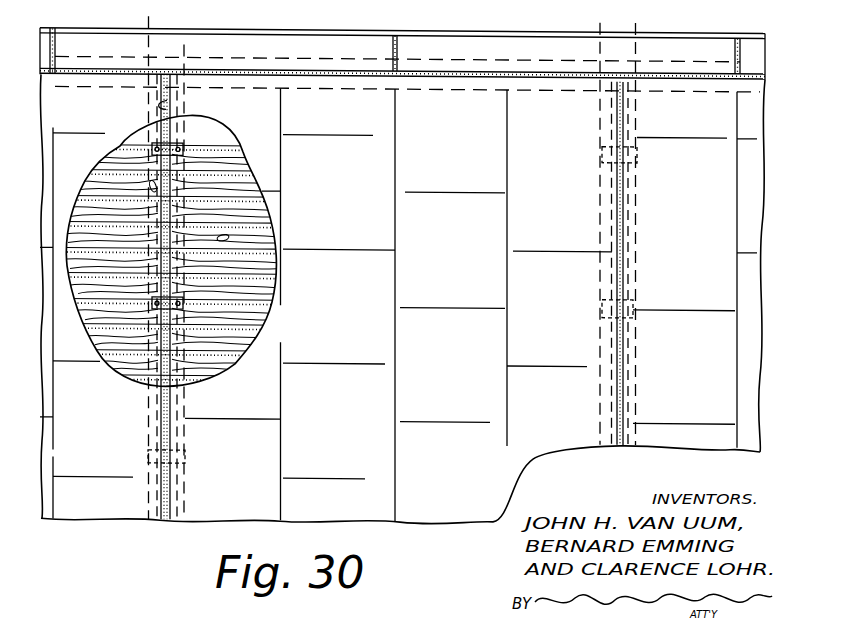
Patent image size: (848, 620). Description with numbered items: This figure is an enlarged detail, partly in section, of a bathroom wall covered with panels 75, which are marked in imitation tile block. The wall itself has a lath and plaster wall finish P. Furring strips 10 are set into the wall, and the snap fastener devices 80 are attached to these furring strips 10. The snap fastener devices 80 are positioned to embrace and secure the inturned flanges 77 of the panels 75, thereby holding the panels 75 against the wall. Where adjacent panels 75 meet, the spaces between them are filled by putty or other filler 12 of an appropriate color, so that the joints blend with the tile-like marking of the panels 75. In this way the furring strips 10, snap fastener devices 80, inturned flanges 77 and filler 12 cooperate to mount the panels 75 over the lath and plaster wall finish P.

The furring strips 10 is at (186, 43).
The inturned flanges 77 is at (272, 31).
The snap fastener devices 80 is at (184, 146).
The lath and plaster wall finish P is at (200, 166).
The putty or other filler 12 is at (612, 185).
The panels 75 is at (452, 307).